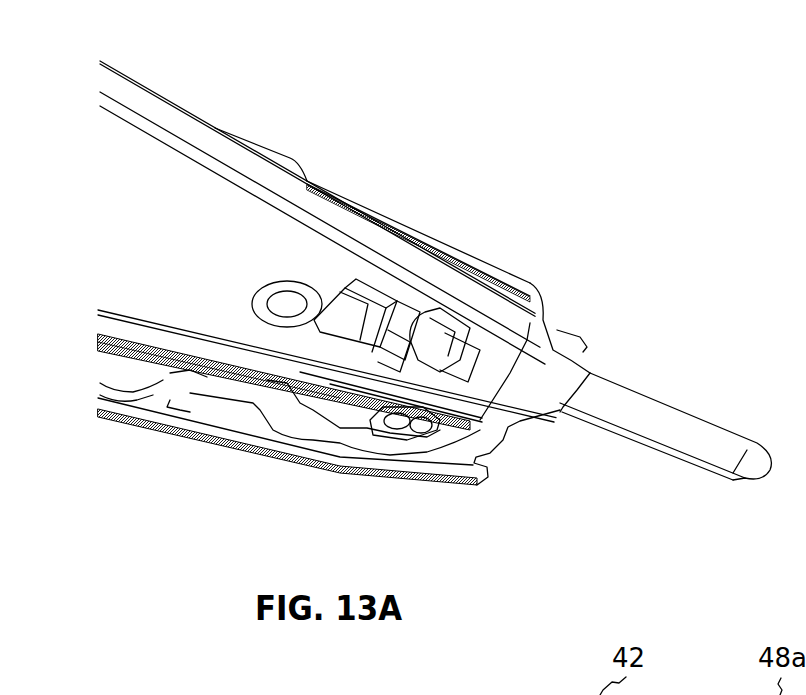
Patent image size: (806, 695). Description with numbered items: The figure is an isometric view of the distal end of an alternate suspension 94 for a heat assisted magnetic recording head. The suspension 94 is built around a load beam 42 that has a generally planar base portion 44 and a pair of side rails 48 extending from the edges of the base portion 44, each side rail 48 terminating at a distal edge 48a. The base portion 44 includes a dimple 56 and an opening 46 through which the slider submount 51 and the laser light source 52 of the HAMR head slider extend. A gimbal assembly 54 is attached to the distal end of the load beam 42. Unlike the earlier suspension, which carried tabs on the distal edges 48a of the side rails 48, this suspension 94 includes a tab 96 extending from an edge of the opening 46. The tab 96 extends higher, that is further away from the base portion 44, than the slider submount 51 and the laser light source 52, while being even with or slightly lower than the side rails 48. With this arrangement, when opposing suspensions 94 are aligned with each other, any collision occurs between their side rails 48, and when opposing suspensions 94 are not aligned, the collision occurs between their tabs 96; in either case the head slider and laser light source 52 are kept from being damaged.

The load beam 42 is at (161, 86).
The base portion 44 is at (192, 230).
The opening 46 is at (334, 302).
The side rails 48 is at (309, 183).
The distal edge 48a is at (206, 126).
The slider submount 51 is at (375, 294).
The laser light source 52 is at (394, 327).
The gimbal assembly 54 is at (361, 470).
The dimple 56 is at (254, 292).
The suspension 94 is at (412, 113).
The tab 96 is at (440, 325).